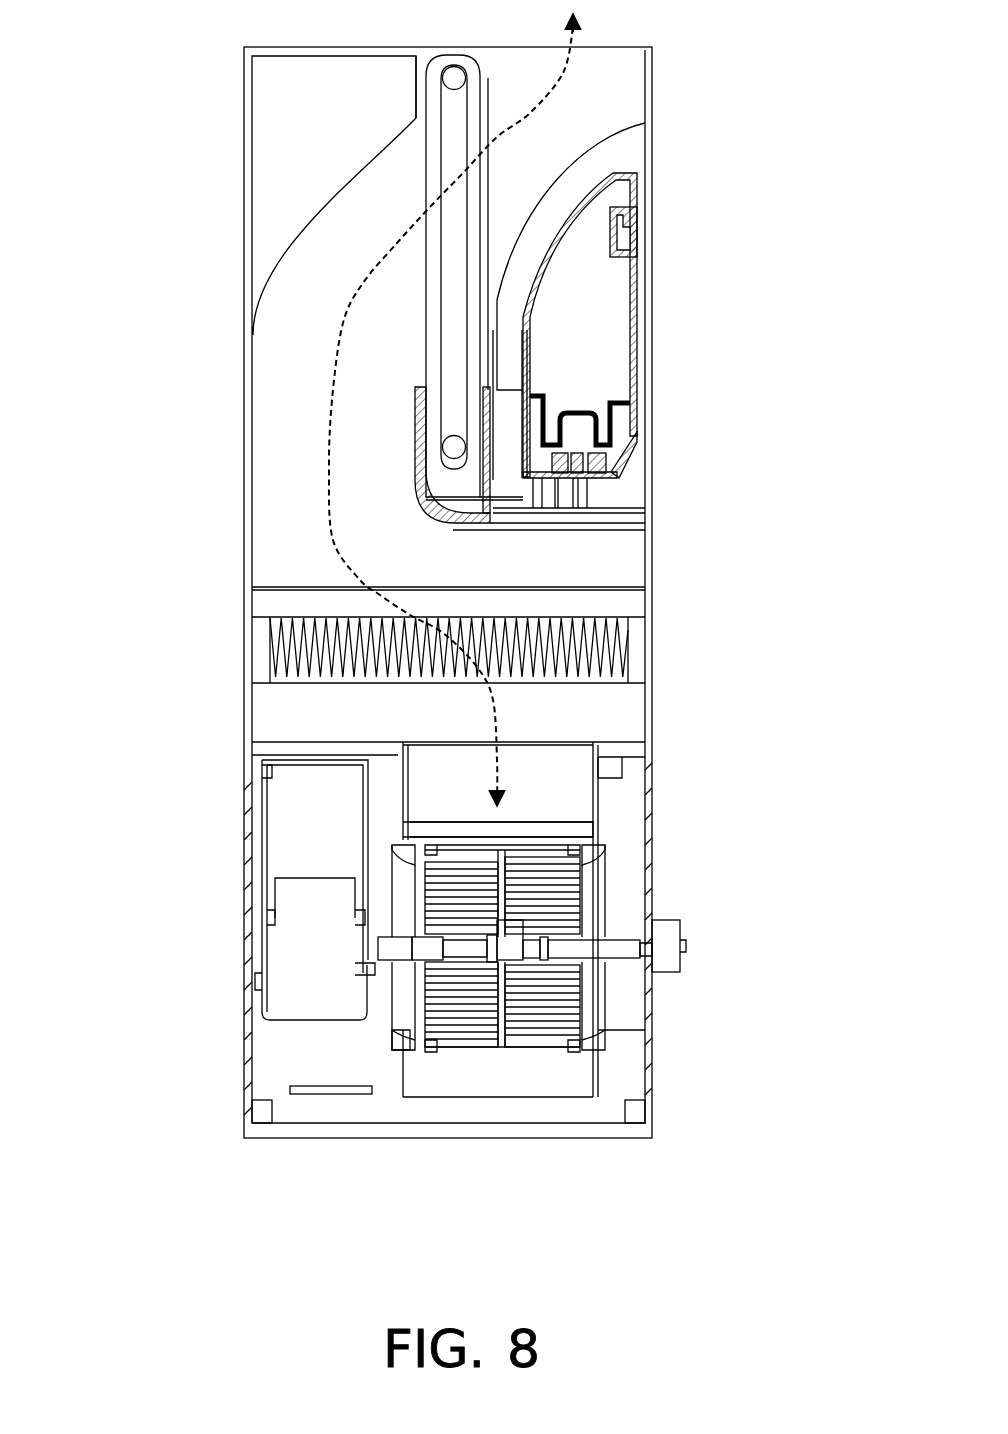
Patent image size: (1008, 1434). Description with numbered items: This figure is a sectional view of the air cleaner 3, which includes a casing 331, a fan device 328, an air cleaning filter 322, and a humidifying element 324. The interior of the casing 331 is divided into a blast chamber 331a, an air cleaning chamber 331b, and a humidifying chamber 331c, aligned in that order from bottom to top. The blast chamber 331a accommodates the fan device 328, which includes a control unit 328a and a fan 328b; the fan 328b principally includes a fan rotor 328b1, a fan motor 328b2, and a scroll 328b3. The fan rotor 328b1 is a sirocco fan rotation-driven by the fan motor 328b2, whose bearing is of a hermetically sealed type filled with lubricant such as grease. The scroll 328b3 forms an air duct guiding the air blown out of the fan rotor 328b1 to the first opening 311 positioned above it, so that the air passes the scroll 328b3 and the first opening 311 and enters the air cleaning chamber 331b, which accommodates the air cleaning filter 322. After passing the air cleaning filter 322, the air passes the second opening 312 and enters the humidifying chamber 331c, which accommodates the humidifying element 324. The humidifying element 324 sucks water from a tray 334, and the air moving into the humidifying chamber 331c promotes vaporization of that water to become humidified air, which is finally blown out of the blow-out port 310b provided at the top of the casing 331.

The air cleaner 3 is at (233, 63).
The casing 331 is at (250, 103).
The humidifying chamber 331c is at (272, 402).
The blow-out port 310b is at (640, 50).
The humidifying element 324 is at (431, 268).
The tray 334 is at (404, 462).
The second opening 312 is at (446, 530).
The air cleaning filter 322 is at (636, 645).
The air cleaning chamber 331b is at (268, 700).
The first opening 311 is at (583, 741).
The fan device 328 is at (136, 1043).
The fan 328b is at (376, 1038).
The scroll 328b3 is at (535, 818).
The fan motor 328b2 is at (282, 945).
The fan rotor 328b1 is at (567, 995).
The control unit 328a is at (300, 1088).
The blast chamber 331a is at (622, 1080).